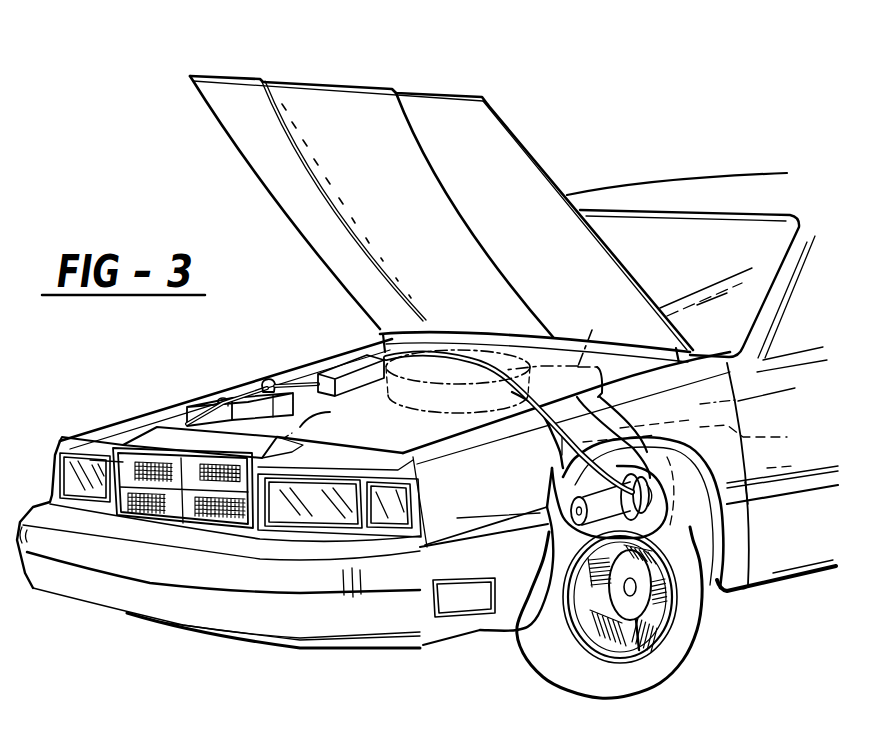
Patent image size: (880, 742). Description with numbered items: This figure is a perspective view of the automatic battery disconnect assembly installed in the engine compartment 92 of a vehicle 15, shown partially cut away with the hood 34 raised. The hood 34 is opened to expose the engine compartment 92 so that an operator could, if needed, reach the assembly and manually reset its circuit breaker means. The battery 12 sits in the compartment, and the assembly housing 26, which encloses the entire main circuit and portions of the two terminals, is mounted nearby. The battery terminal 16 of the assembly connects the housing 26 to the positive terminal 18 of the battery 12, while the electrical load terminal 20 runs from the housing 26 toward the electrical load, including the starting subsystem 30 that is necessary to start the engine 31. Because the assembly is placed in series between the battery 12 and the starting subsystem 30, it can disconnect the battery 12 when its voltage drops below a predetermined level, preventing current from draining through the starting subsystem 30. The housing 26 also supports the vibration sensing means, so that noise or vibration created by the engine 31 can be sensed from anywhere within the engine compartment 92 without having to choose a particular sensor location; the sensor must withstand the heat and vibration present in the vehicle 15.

The battery 12 is at (225, 400).
The vehicle 15 is at (652, 183).
The battery terminal 16 is at (298, 383).
The positive terminal 18 is at (262, 380).
The electrical load terminal 20 is at (421, 348).
The assembly housing 26 is at (348, 358).
The starting subsystem 30 is at (560, 484).
The engine 31 is at (607, 323).
The hood 34 is at (273, 197).
The engine compartment 92 is at (330, 412).